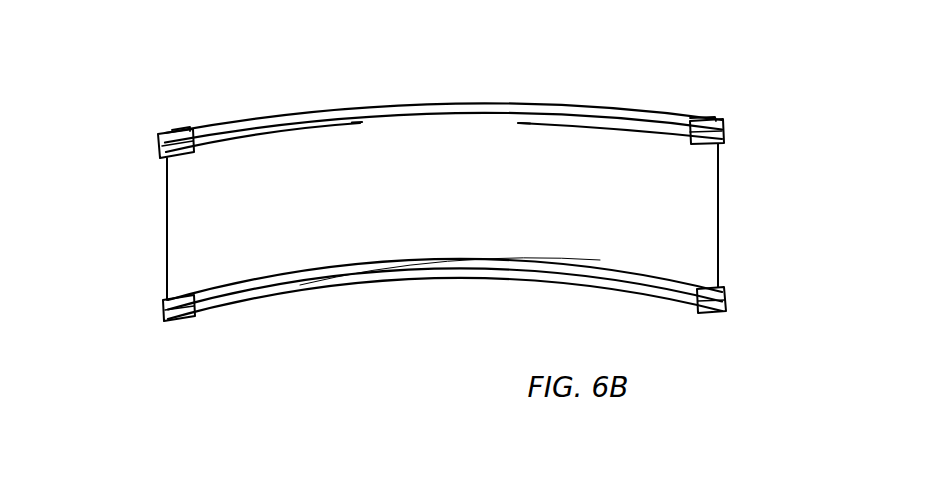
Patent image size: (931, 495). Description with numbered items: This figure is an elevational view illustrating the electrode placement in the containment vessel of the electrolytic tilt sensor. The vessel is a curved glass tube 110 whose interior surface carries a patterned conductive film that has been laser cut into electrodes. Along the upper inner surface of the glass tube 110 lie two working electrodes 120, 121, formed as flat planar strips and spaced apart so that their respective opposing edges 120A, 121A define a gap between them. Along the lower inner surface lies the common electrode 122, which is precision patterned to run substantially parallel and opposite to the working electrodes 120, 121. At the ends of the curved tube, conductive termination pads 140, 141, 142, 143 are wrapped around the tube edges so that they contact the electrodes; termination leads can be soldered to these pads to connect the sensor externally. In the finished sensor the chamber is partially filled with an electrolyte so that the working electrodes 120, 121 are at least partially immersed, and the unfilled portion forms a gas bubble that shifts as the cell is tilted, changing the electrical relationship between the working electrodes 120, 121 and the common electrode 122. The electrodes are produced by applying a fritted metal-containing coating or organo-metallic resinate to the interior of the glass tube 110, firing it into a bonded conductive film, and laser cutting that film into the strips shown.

The curved glass tube 110 is at (478, 102).
The electrode 120 is at (277, 140).
The opposing edge 120A is at (357, 128).
The electrode 121 is at (592, 133).
The opposing edge 121A is at (518, 122).
The common electrode 122 is at (367, 262).
The conductive termination pad 140 is at (172, 130).
The conductive termination pad 141 is at (718, 120).
The conductive termination pad 142 is at (186, 318).
The conductive termination pad 143 is at (695, 303).